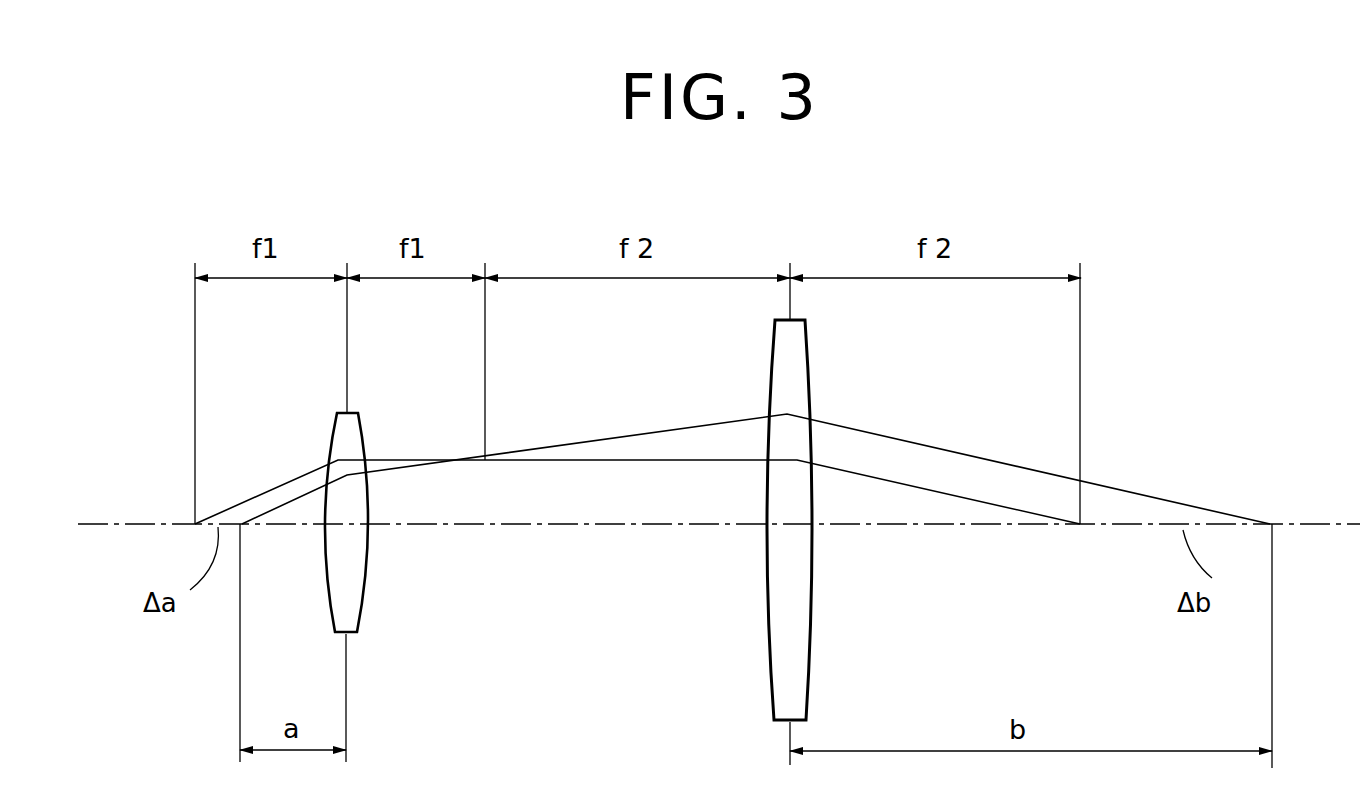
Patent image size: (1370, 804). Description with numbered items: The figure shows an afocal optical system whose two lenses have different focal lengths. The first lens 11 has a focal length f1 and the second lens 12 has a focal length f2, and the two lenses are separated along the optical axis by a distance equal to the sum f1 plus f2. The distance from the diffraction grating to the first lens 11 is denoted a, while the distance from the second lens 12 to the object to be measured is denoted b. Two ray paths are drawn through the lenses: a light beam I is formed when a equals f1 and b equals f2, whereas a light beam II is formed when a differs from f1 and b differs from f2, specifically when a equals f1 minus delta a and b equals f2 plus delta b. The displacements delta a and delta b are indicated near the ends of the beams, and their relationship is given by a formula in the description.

The first lens 11 is at (350, 612).
The second lens 12 is at (780, 687).
The light beam I is at (267, 488).
The light beam II is at (288, 503).